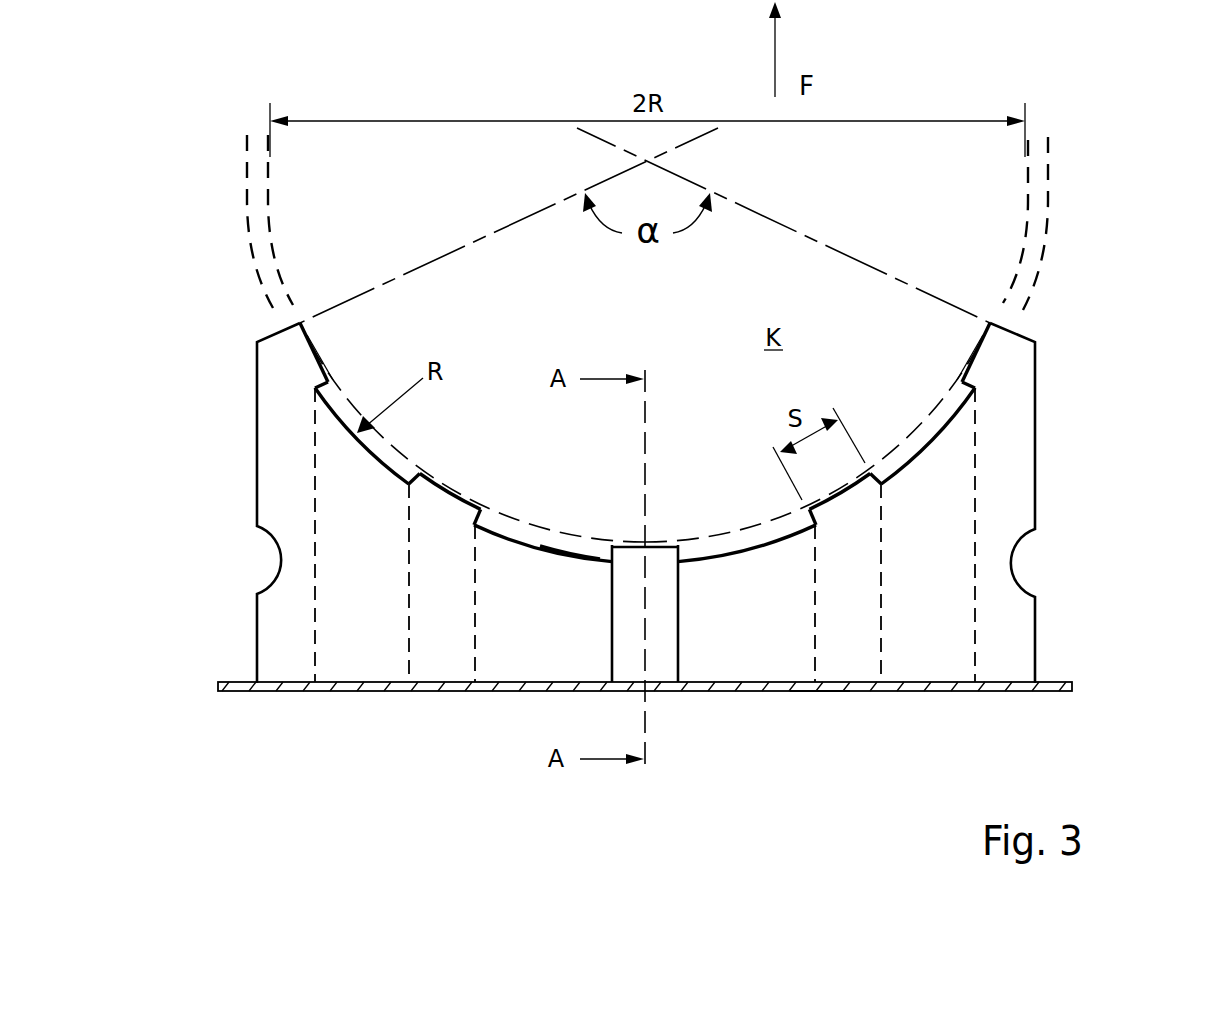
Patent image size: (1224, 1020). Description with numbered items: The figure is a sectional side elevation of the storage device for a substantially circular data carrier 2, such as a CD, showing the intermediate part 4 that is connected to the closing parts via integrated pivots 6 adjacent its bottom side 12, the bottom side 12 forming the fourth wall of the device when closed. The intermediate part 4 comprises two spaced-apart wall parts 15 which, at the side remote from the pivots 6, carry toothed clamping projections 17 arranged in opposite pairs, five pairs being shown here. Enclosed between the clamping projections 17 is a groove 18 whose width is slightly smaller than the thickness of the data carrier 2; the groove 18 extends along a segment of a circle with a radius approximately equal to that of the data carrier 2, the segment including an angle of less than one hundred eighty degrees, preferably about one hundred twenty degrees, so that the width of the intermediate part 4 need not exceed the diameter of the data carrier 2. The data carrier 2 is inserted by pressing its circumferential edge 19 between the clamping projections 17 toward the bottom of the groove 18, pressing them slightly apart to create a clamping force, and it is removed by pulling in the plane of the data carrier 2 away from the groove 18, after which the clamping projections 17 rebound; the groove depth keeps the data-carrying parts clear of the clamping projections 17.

The data carrier 2 is at (882, 202).
The intermediate part 4 is at (1011, 472).
The integrated pivots 6 is at (1072, 683).
The bottom side 12 is at (815, 692).
The wall parts 15 is at (375, 647).
The clamping projections 17 is at (302, 358).
The groove 18 is at (560, 553).
The circumferential edge 19 is at (1023, 226).